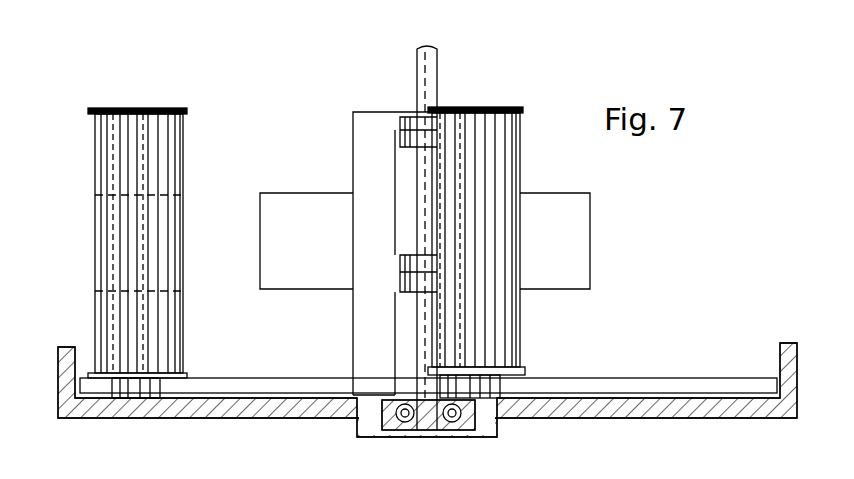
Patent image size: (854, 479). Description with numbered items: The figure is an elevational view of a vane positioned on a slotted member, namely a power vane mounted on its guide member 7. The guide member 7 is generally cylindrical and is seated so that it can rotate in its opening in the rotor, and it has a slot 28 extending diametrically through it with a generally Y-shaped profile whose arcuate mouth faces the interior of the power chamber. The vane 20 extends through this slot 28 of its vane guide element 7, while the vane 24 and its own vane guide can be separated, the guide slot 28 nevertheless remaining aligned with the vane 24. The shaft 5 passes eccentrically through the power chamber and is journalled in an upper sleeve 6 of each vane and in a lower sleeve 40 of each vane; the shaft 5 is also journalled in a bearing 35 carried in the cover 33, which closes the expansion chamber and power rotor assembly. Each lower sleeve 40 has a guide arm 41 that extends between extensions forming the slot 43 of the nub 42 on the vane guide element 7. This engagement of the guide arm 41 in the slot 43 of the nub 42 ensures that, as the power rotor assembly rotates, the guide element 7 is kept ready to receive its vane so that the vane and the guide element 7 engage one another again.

The shaft 5 is at (438, 58).
The upper sleeve 6 is at (400, 123).
The guide member 7 is at (150, 110).
The vane 20 is at (576, 241).
The vane 24 is at (270, 243).
The slot 28 is at (155, 234).
The cover 33 is at (612, 398).
The bearing 35 is at (406, 396).
The lower sleeve 40 is at (400, 264).
The guide arm 41 is at (272, 388).
The nub 42 is at (160, 386).
The slot 43 is at (500, 386).